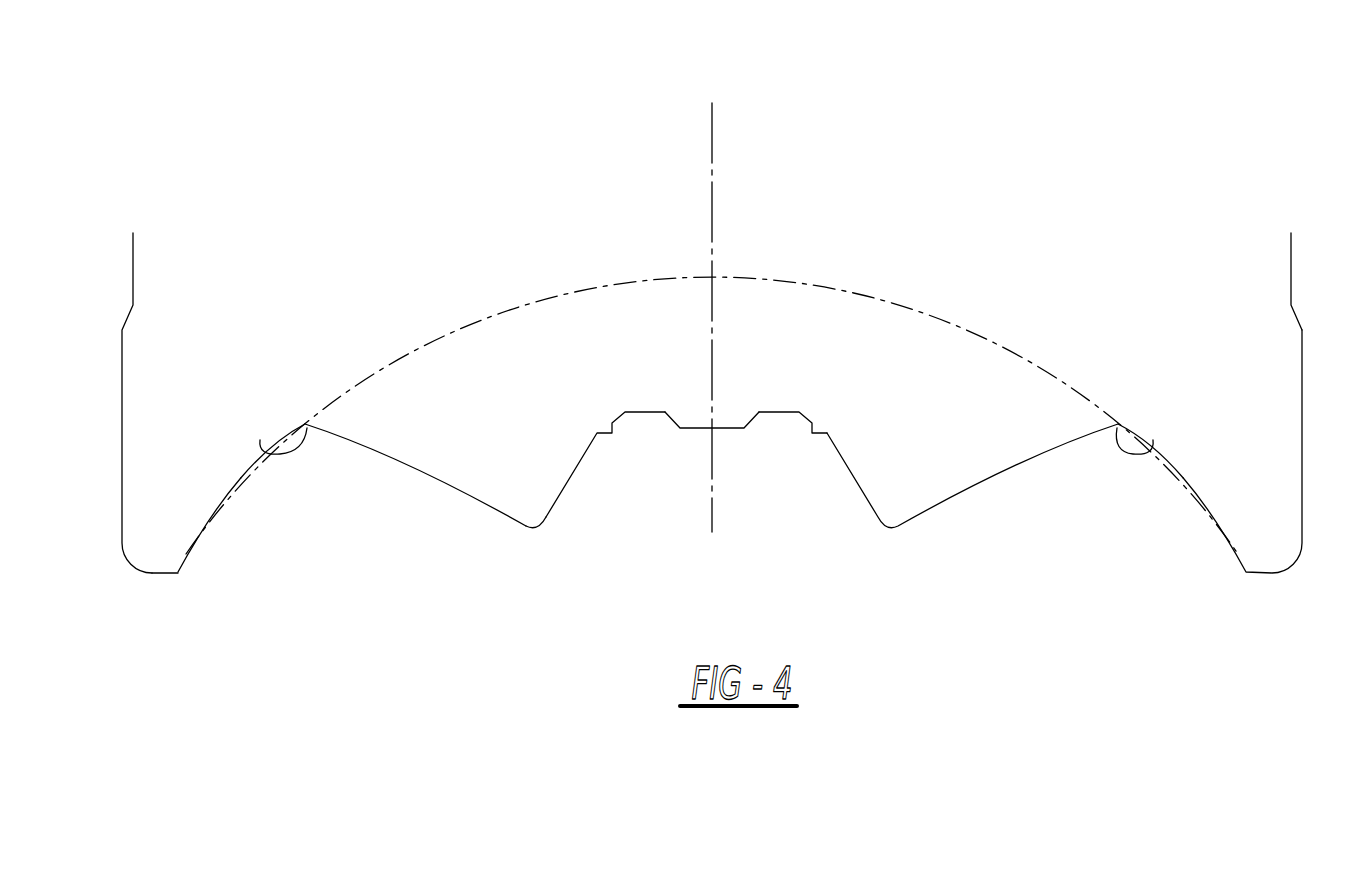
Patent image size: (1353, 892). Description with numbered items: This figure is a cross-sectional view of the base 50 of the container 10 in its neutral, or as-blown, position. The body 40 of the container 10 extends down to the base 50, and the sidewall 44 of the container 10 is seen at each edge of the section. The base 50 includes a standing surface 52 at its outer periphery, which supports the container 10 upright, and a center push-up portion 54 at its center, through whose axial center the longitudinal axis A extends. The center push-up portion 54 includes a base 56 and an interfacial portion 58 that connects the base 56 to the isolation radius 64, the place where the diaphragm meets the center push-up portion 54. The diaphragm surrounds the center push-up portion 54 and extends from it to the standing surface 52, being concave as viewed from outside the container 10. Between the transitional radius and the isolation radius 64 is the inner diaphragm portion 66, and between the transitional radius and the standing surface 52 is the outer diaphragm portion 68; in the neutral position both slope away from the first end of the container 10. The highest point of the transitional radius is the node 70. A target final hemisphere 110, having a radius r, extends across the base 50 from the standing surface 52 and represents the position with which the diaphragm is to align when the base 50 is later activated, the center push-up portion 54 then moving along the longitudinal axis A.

The container 10 is at (307, 122).
The body 40 is at (1291, 283).
The sidewall 44 is at (1303, 448).
The base 50 is at (888, 560).
The standing surface 52 is at (172, 573).
The center push-up portion 54 is at (728, 430).
The base (of the center push-up portion) 56 is at (738, 430).
The interfacial portion 58 is at (577, 477).
The isolation radius 64 is at (532, 528).
The inner diaphragm portion 66 is at (397, 467).
The outer diaphragm portion 68 is at (222, 500).
The node 70 is at (307, 428).
The target final hemisphere 110 is at (843, 290).
The longitudinal axis A is at (712, 138).
The radius r is at (937, 318).